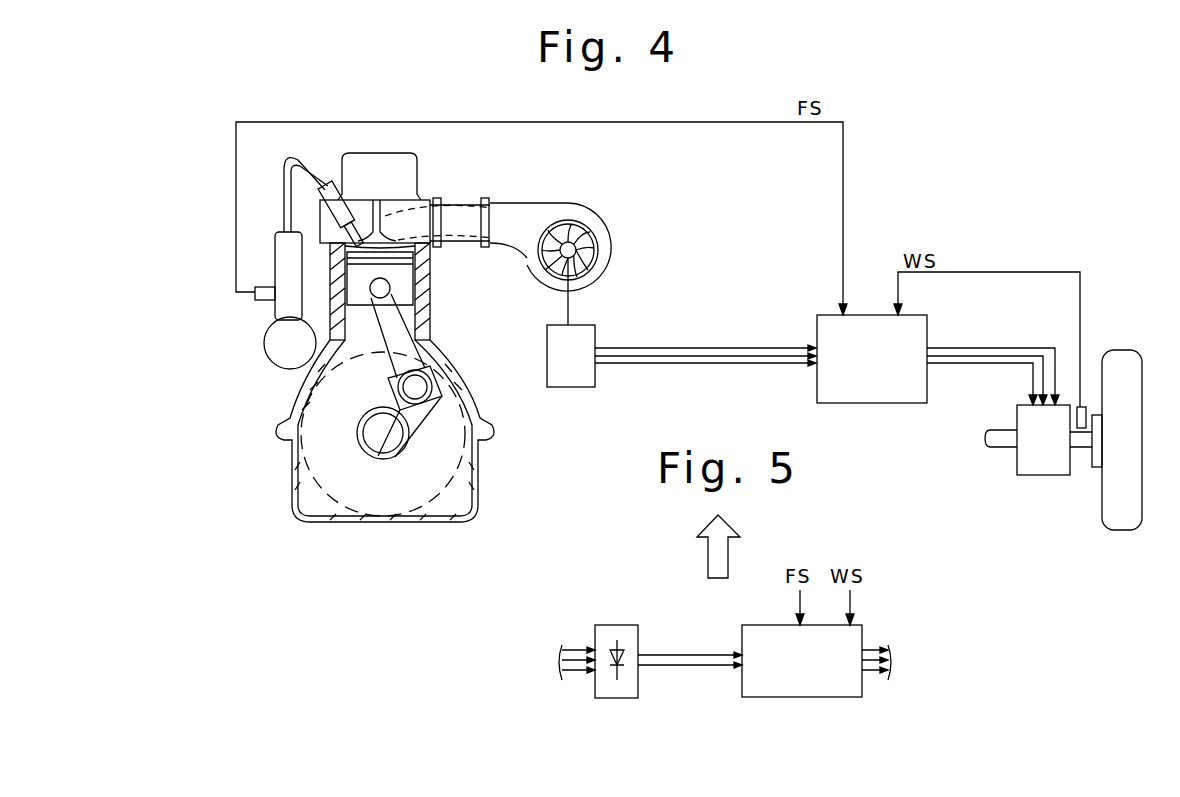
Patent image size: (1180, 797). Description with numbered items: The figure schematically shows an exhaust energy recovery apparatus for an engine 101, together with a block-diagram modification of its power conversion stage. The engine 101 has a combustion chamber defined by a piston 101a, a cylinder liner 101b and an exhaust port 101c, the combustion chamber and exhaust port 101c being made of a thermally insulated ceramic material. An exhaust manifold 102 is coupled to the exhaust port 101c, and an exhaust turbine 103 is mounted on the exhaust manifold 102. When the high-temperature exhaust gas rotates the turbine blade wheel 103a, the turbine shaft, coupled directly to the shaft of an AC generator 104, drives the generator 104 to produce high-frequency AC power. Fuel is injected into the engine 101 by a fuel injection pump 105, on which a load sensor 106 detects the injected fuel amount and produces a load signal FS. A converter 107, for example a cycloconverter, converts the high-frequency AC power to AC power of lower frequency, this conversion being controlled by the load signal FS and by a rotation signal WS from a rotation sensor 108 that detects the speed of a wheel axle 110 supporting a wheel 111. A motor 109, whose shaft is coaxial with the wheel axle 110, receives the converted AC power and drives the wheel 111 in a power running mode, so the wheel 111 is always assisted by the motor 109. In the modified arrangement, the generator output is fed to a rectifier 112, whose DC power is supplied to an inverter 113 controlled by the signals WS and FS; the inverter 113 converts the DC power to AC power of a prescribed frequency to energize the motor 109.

In FIG. 4, the engine 101 is at (275, 413).
In FIG. 4, the piston 101a is at (397, 285).
In FIG. 4, the cylinder liner 101b is at (428, 322).
In FIG. 4, the exhaust port 101c is at (430, 258).
In FIG. 4, the exhaust manifold 102 is at (463, 207).
In FIG. 4, the exhaust turbine 103 is at (592, 225).
In FIG. 4, the turbine blade wheel 103a is at (597, 262).
In FIG. 4, the AC generator 104 is at (590, 335).
In FIG. 4, the fuel injection pump 105 is at (282, 262).
In FIG. 4, the load sensor 106 is at (263, 298).
In FIG. 4, the converter 107 is at (918, 390).
In FIG. 4, the rotation sensor 108 is at (1078, 405).
In FIG. 4, the motor 109 is at (1052, 465).
In FIG. 4, the wheel axle 110 is at (1000, 445).
In FIG. 4, the wheel 111 is at (1122, 358).
In FIG. 5, the rectifier 112 is at (622, 645).
In FIG. 5, the inverter 113 is at (750, 640).